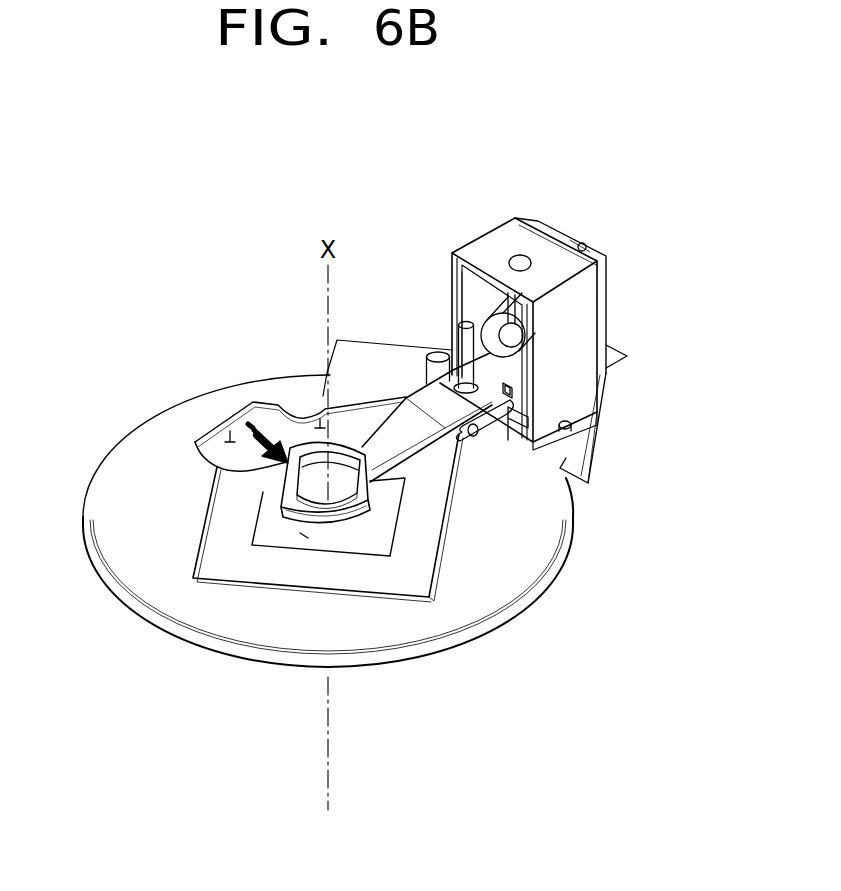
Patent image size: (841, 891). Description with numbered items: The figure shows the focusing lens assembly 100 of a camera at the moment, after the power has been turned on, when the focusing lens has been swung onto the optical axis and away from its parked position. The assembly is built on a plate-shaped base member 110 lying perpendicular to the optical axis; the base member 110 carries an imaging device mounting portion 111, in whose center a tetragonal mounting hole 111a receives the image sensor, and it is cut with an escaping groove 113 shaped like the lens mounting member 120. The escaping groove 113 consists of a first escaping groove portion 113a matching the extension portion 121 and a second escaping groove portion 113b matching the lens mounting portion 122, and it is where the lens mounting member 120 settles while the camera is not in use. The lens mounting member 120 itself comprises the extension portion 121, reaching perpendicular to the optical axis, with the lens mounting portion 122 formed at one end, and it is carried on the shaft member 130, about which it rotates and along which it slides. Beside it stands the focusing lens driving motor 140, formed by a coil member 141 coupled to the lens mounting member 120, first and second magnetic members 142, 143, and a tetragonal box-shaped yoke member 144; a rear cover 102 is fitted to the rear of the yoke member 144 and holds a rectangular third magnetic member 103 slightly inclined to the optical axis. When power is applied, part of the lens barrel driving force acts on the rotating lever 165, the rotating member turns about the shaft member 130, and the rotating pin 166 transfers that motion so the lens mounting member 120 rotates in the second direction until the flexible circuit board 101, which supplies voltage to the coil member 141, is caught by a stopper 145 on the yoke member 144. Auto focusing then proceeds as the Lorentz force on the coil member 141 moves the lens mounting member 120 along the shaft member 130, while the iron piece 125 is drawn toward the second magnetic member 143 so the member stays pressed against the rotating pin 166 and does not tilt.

The focusing lens assembly 100 is at (367, 119).
The flexible circuit board 101 is at (575, 456).
The rear cover 102 is at (604, 295).
The third magnetic member 103 is at (585, 246).
The base member 110 is at (480, 597).
The imaging device mounting portion 111 is at (408, 578).
The mounting hole 111a is at (303, 537).
The escaping groove 113 is at (260, 320).
The first escaping groove portion 113a is at (320, 424).
The second escaping groove portion 113b is at (230, 436).
The lens mounting member 120 is at (433, 443).
The extension portion 121 is at (420, 465).
The lens mounting portion 122 is at (265, 491).
The iron piece 125 is at (572, 424).
The shaft member 130 is at (517, 318).
The focusing lens driving motor 140 is at (499, 224).
The coil member 141 is at (497, 312).
The first magnetic member 142 is at (470, 290).
The second magnetic member 143 is at (527, 372).
The yoke member 144 is at (576, 313).
The stopper 145 is at (601, 438).
The rotating lever 165 is at (432, 351).
The rotating pin 166 is at (458, 327).